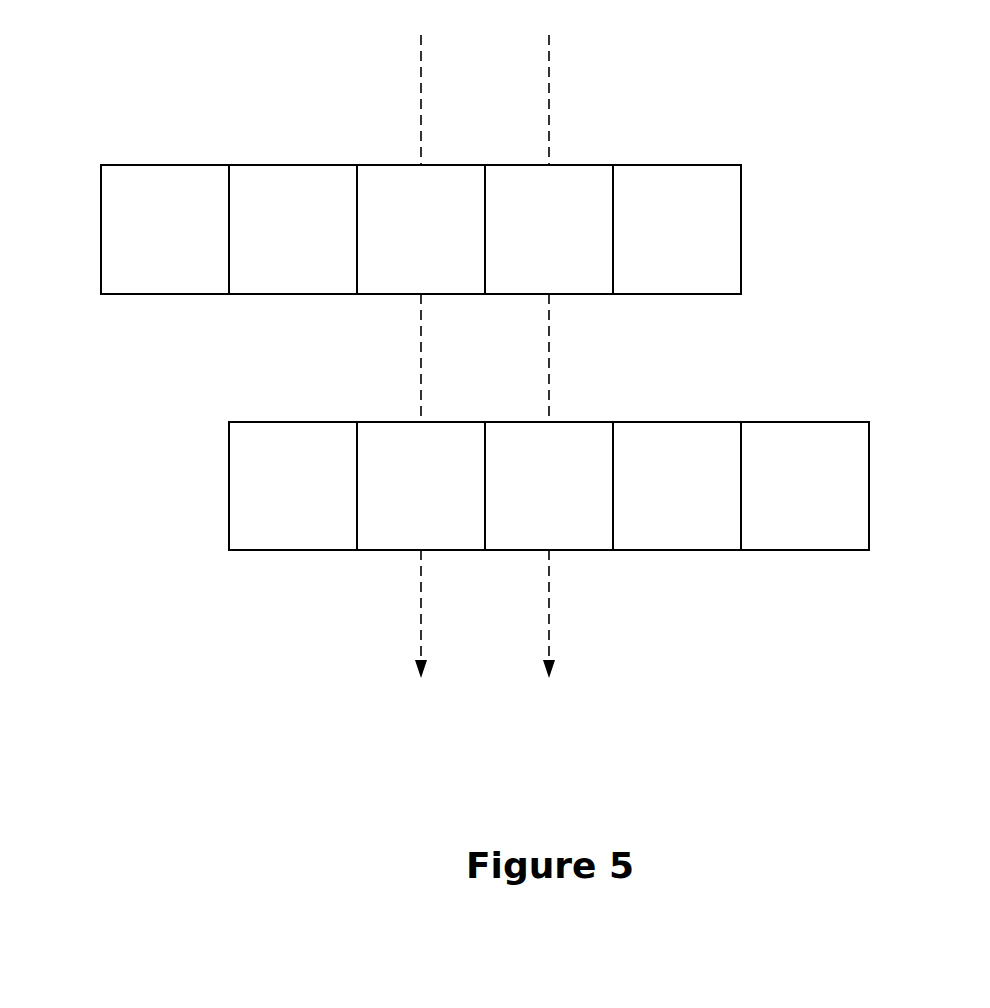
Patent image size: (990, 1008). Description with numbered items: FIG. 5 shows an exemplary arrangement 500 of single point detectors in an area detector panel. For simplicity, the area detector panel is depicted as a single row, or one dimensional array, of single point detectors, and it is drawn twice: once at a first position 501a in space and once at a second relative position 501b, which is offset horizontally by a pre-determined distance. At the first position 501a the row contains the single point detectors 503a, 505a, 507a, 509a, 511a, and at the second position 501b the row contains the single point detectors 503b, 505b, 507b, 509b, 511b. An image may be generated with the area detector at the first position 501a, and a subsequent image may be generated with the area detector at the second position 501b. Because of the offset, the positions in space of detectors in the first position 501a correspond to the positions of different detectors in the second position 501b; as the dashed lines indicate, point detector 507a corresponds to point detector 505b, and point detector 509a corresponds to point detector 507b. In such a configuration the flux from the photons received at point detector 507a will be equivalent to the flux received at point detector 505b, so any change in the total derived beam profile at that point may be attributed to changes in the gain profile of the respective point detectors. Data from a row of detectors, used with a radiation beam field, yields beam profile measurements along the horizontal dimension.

The pipelined data processing arrangement 500 is at (521, 409).
The area detector panel at first position 501a is at (466, 208).
The area detector panel at second position 501b is at (585, 455).
The single point detector 503a is at (185, 229).
The single point detector 505a is at (313, 229).
The point detector 507a is at (441, 229).
The point detector 509a is at (569, 229).
The single point detector 511a is at (697, 229).
The single point detector 503b is at (313, 486).
The point detector 505b is at (441, 486).
The point detector 507b is at (569, 486).
The single point detector 509b is at (697, 486).
The single point detector 511b is at (825, 486).